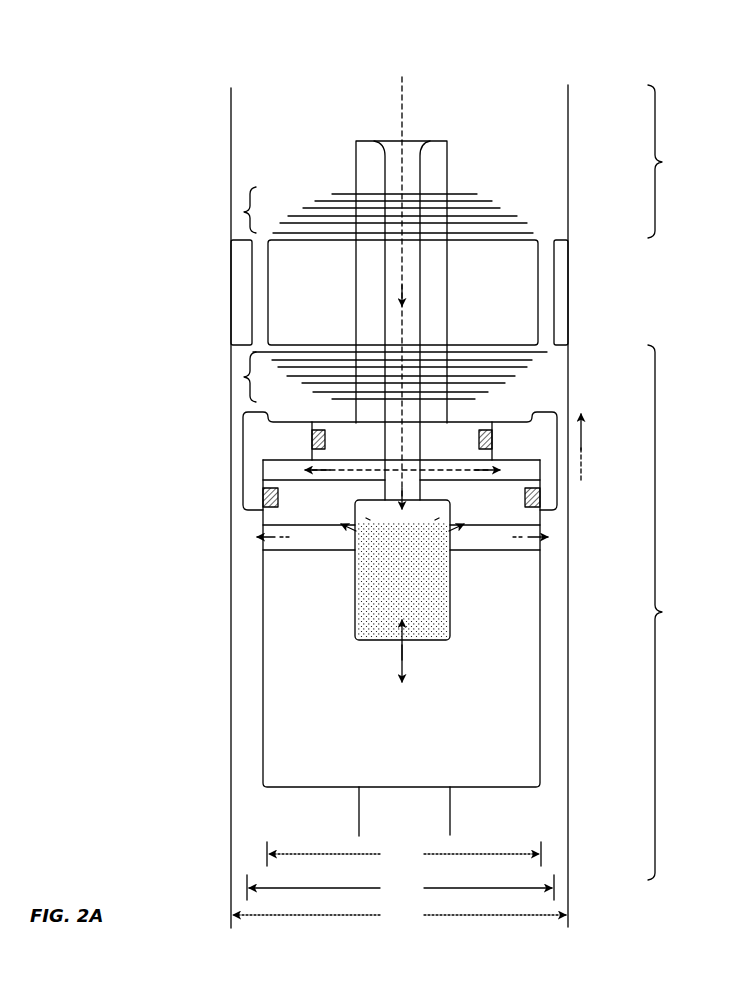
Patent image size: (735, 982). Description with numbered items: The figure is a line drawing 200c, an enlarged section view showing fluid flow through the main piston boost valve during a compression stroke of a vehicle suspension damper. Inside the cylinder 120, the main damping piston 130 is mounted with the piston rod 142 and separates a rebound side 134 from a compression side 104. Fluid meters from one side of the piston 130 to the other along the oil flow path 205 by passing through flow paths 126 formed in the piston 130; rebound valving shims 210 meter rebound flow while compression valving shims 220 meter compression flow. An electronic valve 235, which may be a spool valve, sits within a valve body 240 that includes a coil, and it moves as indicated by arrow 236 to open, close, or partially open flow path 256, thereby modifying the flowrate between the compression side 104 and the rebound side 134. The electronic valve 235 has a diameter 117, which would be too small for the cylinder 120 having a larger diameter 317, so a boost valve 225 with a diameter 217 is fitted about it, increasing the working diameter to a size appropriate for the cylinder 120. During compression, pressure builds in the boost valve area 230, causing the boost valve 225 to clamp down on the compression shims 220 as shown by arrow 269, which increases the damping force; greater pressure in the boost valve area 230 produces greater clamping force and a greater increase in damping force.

The line drawing 200c is at (239, 64).
The oil flow path 205 is at (402, 77).
The rebound valving shims 210 is at (243, 212).
The compression valving shims 220 is at (243, 377).
The main damping piston 130 is at (241, 290).
The flow paths 126 is at (548, 284).
The rebound side 134 is at (530, 292).
The compression side 104 is at (675, 612).
The boost valve 225 is at (278, 470).
The boost valve area 230 is at (263, 505).
The electronic valve 235 is at (353, 573).
The arrow 236 is at (393, 655).
The valve body 240 is at (263, 674).
The flow path 256 is at (258, 543).
The arrow 269 is at (582, 450).
The cylinder 120 is at (231, 778).
The piston rod 142 is at (359, 805).
The diameter 117 is at (404, 854).
The diameter 217 is at (400, 887).
The diameter 317 is at (399, 915).